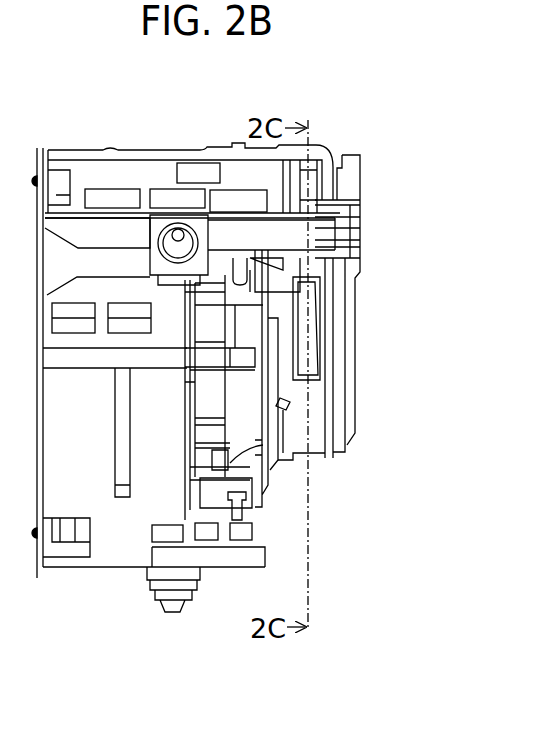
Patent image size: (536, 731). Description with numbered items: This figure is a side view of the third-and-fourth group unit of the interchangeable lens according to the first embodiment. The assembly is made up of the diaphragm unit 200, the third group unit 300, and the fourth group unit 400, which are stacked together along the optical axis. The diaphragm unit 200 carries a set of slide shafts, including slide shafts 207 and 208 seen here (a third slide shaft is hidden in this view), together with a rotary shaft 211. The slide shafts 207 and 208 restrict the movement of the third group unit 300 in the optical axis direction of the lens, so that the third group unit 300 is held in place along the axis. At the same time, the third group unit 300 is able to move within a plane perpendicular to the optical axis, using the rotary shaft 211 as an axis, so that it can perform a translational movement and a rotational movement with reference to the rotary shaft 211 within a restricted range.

The diaphragm unit 200 is at (239, 364).
The slide shaft 207 is at (237, 505).
The slide shaft 208 is at (240, 265).
The rotary shaft 211 is at (212, 358).
The third group unit 300 is at (274, 509).
The fourth group unit 400 is at (357, 342).